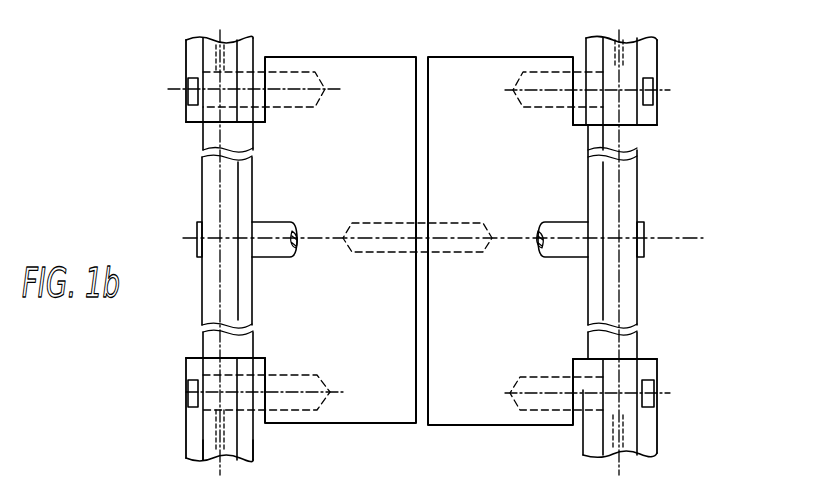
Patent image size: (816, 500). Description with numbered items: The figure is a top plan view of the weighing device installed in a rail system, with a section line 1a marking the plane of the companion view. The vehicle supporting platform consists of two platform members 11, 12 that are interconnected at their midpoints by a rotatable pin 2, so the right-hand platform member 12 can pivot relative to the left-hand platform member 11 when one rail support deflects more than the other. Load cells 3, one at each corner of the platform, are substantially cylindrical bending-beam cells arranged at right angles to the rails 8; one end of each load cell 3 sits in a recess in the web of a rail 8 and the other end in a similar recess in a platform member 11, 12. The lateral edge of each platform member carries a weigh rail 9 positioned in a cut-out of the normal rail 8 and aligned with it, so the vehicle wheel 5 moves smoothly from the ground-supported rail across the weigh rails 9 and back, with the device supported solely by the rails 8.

The section line 1a is at (336, 243).
The rotatable pin 2 is at (447, 255).
The load cell 3 is at (284, 72).
The vehicle wheel 5 is at (632, 284).
The rail 8 is at (226, 448).
The weigh rail 9 is at (212, 144).
The platform member 11 is at (393, 58).
The platform member 12 is at (451, 60).